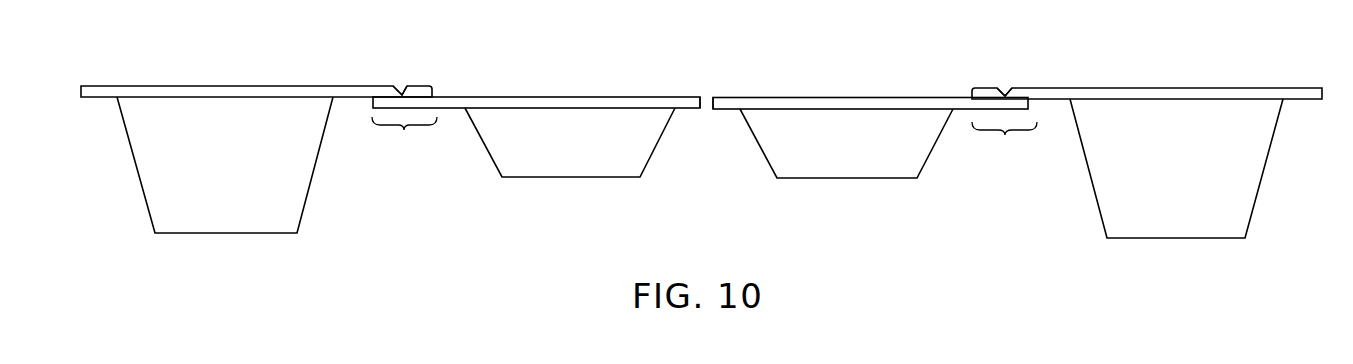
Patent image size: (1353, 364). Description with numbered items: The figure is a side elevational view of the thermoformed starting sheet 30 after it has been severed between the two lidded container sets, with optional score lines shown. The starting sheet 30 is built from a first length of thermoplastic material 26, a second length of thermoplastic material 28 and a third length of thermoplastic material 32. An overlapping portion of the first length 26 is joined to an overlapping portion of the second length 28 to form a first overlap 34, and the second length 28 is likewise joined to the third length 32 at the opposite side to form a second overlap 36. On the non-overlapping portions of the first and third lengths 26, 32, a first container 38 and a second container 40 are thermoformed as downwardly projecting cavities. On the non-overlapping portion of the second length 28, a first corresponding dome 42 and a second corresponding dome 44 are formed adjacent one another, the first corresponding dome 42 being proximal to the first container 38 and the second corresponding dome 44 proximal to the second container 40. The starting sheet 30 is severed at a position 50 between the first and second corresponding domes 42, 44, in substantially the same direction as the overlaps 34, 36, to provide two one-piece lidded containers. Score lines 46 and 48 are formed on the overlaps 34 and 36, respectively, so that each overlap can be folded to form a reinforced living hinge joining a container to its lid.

The first length of thermoplastic material 26 is at (237, 83).
The second length of thermoplastic material 28 is at (562, 97).
The third length of thermoplastic material 32 is at (1185, 87).
The first container 38 is at (123, 127).
The second container 40 is at (1262, 193).
The first corresponding dome 42 is at (547, 178).
The second corresponding dome 44 is at (848, 180).
The score line 46 is at (400, 83).
The score line 48 is at (1005, 87).
The first overlap 34 is at (404, 138).
The second overlap 36 is at (1004, 141).
The position 50 is at (707, 97).
The starting sheet 30 is at (753, 190).